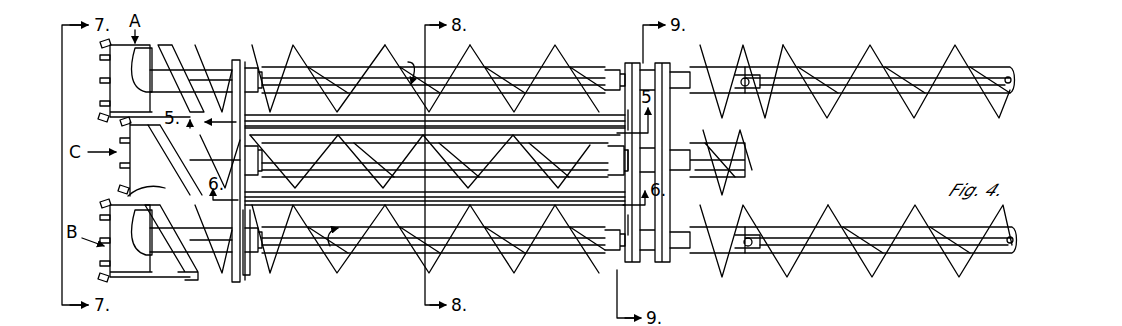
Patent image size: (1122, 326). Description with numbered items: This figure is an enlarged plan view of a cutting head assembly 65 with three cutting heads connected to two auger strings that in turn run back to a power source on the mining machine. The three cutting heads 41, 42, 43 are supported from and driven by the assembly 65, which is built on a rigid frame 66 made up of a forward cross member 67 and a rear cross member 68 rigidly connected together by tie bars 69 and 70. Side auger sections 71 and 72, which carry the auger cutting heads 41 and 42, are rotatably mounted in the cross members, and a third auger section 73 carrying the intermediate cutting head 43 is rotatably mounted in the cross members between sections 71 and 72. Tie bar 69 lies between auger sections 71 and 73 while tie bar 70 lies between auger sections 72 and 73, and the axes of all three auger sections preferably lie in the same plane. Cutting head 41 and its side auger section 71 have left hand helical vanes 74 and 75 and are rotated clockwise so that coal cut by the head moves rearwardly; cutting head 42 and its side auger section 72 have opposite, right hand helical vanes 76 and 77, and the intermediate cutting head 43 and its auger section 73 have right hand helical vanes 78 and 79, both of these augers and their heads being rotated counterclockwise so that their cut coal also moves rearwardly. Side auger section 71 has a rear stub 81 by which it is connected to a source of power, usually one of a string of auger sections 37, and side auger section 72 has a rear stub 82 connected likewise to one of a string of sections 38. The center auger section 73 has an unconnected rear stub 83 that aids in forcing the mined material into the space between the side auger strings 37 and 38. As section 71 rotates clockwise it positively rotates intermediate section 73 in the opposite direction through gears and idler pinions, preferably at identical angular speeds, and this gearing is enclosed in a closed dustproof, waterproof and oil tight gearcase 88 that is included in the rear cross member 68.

The string of auger sections 37 is at (816, 66).
The string of auger sections 38 is at (820, 253).
The cutting head 41 is at (110, 68).
The cutting head 42 is at (128, 277).
The cutting head 43 is at (125, 177).
The cutting head assembly 65 is at (340, 258).
The rigid frame 66 is at (237, 62).
The forward cross member 67 is at (240, 265).
The rear cross member 68 is at (630, 62).
The tie bar 69 is at (320, 92).
The tie bar 70 is at (404, 197).
The side auger section 71 is at (505, 62).
The side auger section 72 is at (508, 255).
The third auger section 73 is at (525, 192).
The left hand helical vane 74 is at (188, 52).
The left hand helical vane 75 is at (366, 62).
The right hand helical vane 76 is at (190, 275).
The right hand helical vane 77 is at (458, 258).
The right hand helical vane 78 is at (168, 182).
The right hand helical vane 79 is at (455, 190).
The rear stub 81 is at (722, 66).
The rear stub 82 is at (676, 258).
The unconnected rear stub 83 is at (748, 152).
The gearcase 88 is at (662, 63).